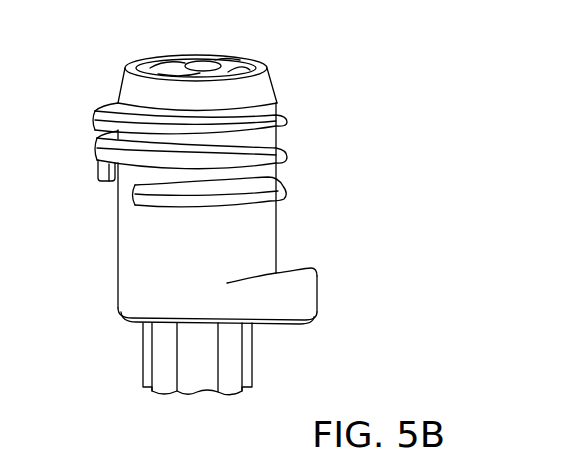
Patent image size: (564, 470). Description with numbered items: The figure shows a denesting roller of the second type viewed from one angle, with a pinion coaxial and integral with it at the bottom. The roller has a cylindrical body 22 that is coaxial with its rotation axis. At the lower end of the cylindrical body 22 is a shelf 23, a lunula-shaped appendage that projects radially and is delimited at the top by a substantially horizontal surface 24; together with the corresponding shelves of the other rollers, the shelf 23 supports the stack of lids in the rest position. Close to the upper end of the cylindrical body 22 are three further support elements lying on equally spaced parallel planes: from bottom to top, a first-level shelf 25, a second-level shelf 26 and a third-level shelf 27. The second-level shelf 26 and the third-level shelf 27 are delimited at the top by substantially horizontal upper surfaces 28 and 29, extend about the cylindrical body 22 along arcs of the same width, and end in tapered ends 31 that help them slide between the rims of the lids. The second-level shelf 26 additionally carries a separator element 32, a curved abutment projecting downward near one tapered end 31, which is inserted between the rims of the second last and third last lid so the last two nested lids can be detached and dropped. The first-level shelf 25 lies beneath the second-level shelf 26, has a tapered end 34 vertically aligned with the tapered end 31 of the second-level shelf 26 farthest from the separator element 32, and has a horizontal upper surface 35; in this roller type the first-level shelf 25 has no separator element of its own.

The cylindrical body 22 is at (128, 266).
The shelf 23 is at (316, 292).
The horizontal surface 24 is at (294, 265).
The first-level shelf 25 is at (131, 196).
The second-level shelf 26 is at (97, 147).
The third-level shelf 27 is at (100, 112).
The upper surface 28 is at (138, 149).
The upper surface 29 is at (108, 99).
The tapered end 31 is at (288, 115).
The separator element 32 is at (98, 170).
The tapered end 34 is at (287, 190).
The upper surface 35 is at (222, 185).